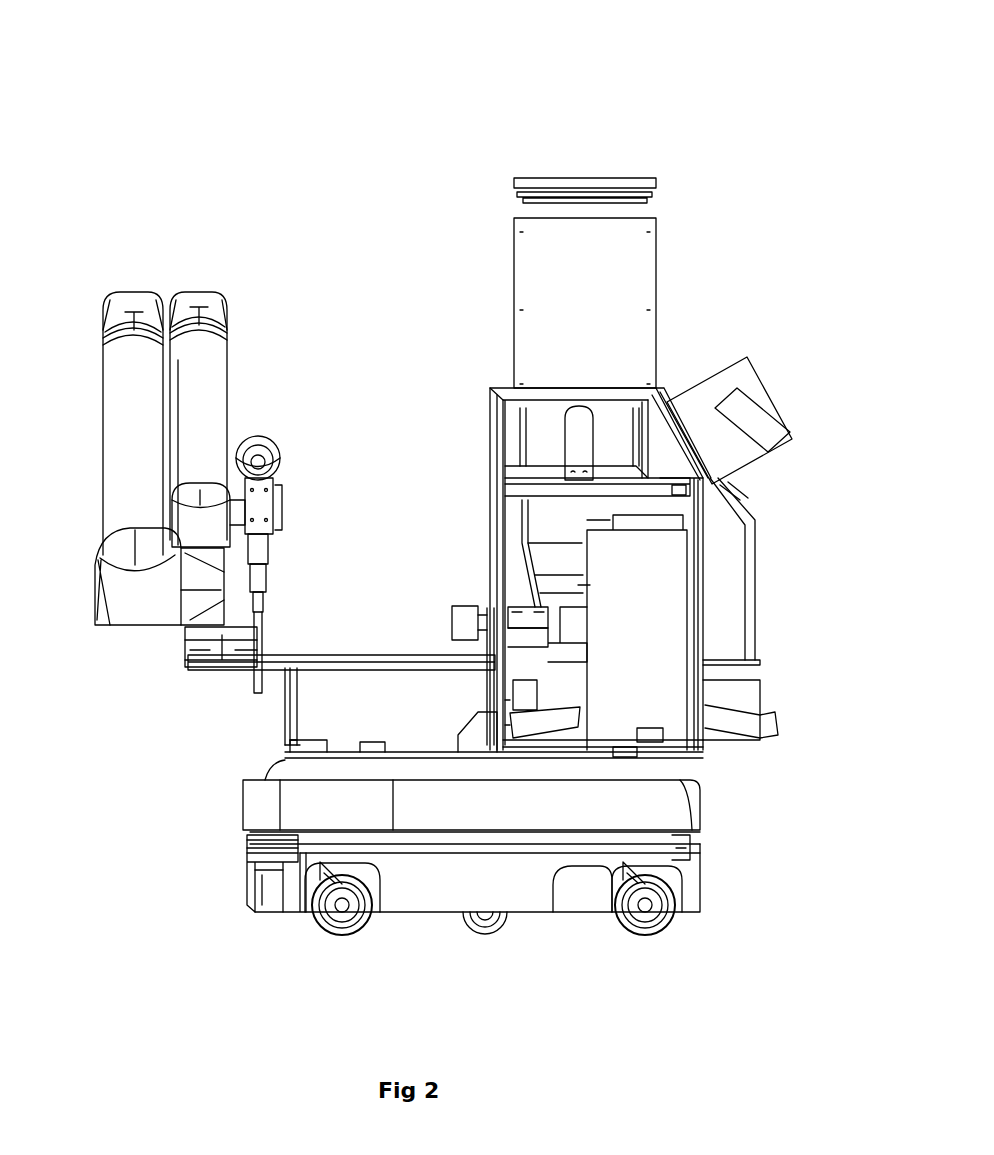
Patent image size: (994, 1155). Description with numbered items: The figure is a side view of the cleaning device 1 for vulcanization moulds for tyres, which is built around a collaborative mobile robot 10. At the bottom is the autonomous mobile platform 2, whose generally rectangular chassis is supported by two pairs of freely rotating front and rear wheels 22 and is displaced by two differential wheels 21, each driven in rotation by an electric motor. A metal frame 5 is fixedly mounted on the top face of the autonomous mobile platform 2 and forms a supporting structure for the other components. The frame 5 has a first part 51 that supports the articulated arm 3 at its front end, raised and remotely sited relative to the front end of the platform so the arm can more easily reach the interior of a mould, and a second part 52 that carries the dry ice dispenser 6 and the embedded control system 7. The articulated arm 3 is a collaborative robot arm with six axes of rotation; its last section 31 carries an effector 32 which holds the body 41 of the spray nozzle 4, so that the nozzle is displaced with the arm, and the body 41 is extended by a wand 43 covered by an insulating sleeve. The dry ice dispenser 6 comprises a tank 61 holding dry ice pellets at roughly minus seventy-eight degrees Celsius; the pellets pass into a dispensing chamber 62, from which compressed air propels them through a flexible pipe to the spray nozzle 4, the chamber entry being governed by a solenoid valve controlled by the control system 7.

The cleaning device 1 is at (667, 137).
The collaborative mobile robot 10 is at (158, 230).
The articulated arm 3 is at (100, 470).
The last section 31 is at (250, 456).
The effector 32 is at (280, 470).
The body 41 is at (262, 508).
The spray nozzle 4 is at (243, 692).
The wand 43 is at (258, 693).
The frame 5 is at (302, 634).
The first part 51 is at (403, 663).
The second part 52 is at (495, 433).
The dispensing chamber 62 is at (523, 518).
The dry ice dispenser 6 is at (667, 352).
The tank 61 is at (640, 240).
The embedded control system 7 is at (750, 465).
The autonomous mobile platform 2 is at (733, 868).
The differential wheels 21 is at (483, 960).
The front and rear wheels 22 is at (338, 915).